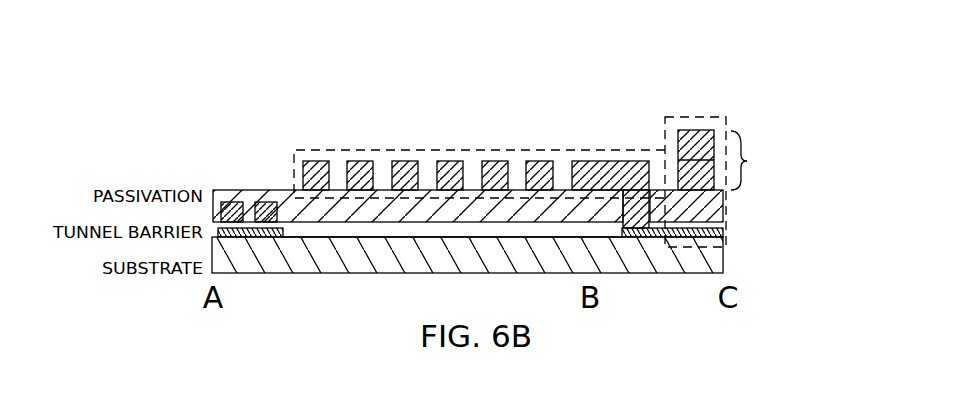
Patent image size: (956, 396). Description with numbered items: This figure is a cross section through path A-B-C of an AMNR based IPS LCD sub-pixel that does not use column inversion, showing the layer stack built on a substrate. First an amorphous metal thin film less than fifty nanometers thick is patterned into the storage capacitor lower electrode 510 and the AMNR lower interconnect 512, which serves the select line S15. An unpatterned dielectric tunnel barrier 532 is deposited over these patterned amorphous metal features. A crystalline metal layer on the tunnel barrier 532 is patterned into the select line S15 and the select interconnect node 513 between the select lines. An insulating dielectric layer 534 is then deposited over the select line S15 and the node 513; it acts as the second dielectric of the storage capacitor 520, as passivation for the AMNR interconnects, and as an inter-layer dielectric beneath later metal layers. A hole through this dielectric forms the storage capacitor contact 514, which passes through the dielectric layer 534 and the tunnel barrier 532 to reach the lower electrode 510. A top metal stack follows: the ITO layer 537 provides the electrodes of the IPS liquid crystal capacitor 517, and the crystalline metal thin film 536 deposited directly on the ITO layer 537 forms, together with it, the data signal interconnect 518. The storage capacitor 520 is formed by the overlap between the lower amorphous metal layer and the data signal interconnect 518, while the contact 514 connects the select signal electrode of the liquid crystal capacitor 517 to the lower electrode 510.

The storage capacitor lower electrode 510 is at (692, 230).
The AMNR lower interconnect 512 is at (252, 237).
The select interconnect node 513 is at (263, 200).
The select line S15 is at (233, 200).
The storage capacitor contact 514 is at (636, 192).
The IPS liquid crystal capacitor 517 is at (399, 145).
The data signal interconnect 518 is at (760, 160).
The storage capacitor 520 is at (704, 111).
The tunnel barrier 532 is at (387, 230).
The insulating dielectric layer 534 is at (720, 207).
The crystalline metal thin film 536 is at (681, 123).
The ITO layer 537 is at (292, 159).